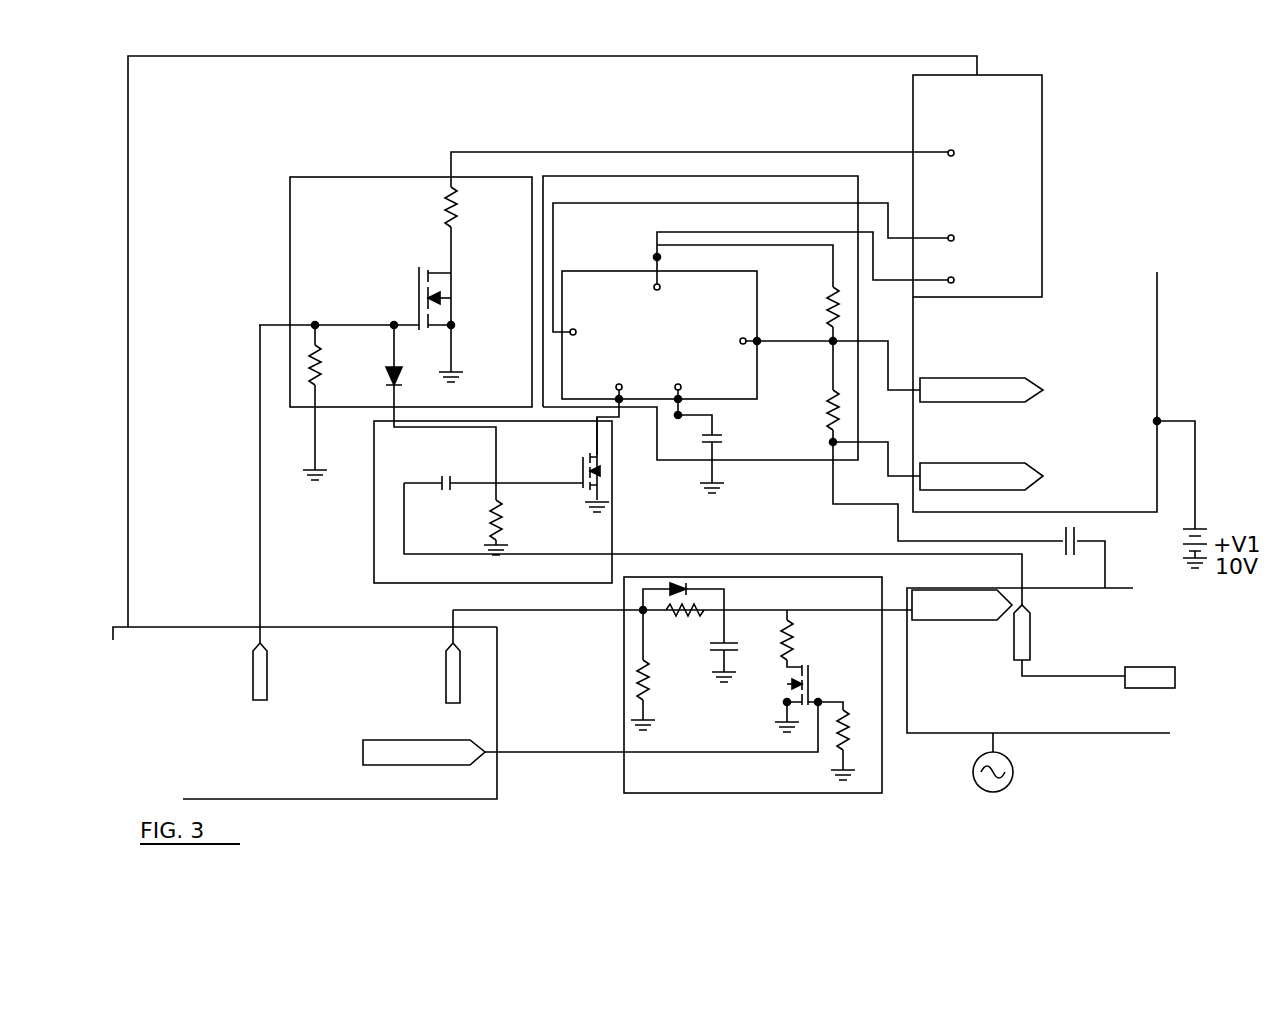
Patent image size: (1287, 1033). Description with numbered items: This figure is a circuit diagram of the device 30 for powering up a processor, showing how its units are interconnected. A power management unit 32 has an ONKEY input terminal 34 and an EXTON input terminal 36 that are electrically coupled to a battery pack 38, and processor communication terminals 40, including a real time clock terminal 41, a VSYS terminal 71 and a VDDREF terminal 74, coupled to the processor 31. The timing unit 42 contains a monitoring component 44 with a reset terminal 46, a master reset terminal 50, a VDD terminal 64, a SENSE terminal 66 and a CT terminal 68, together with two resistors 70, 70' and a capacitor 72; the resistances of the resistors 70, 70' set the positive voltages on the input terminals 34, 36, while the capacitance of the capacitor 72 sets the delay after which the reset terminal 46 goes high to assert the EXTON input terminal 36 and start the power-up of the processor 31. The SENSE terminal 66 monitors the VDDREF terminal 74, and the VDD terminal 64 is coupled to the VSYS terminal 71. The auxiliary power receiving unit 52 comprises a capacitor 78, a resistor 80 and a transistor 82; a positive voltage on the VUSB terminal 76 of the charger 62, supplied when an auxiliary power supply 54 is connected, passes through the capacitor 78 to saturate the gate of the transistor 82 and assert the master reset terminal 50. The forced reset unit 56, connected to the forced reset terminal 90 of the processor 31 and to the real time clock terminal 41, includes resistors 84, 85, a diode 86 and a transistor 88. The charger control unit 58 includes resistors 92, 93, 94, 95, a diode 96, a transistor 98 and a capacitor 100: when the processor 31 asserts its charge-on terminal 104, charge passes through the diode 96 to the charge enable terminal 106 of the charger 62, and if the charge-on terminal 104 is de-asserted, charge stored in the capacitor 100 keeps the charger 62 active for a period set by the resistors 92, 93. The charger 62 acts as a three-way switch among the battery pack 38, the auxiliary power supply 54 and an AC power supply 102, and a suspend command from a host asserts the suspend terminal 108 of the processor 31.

The device 30 is at (1208, 214).
The processor 31 is at (282, 800).
The power management unit 32 is at (1042, 215).
The ONKEY input terminal 34 is at (1007, 463).
The EXTON input terminal 36 is at (1007, 378).
The battery pack 38 is at (1080, 540).
The processor communication terminals 40 is at (1042, 95).
The real time clock terminal 41 is at (950, 98).
The timing unit 42 is at (648, 176).
The monitoring component 44 is at (613, 268).
The reset terminal 46 is at (732, 308).
The master reset terminal 50 is at (613, 393).
The auxiliary power receiving unit 52 is at (374, 540).
The auxiliary power supply 54 is at (1150, 667).
The forced reset unit 56 is at (322, 177).
The charger control unit 58 is at (838, 830).
The charger 62 is at (1122, 733).
The VDD terminal 64 is at (652, 278).
The SENSE terminal 66 is at (595, 303).
The CT terminal 68 is at (687, 378).
The resistor 70 is at (847, 313).
The resistor 70' is at (920, 441).
The VSYS terminal 71 is at (988, 268).
The capacitor 72 is at (730, 452).
The VDDREF terminal 74 is at (997, 235).
The VUSB terminal 76 is at (1030, 620).
The capacitor 78 is at (428, 473).
The resistor 80 is at (495, 517).
The transistor 82 is at (600, 471).
The resistor 84 is at (445, 222).
The resistor 85 is at (305, 380).
The diode 86 is at (400, 397).
The transistor 88 is at (455, 297).
The forced reset terminal 90 is at (253, 670).
The resistor 92 is at (687, 605).
The resistor 93 is at (636, 682).
The resistor 94 is at (827, 638).
The resistor 95 is at (873, 737).
The diode 96 is at (682, 583).
The transistor 98 is at (787, 679).
The capacitor 100 is at (768, 630).
The AC power supply 102 is at (1012, 765).
The charge-on terminal 104 is at (446, 670).
The charge enable terminal 106 is at (932, 621).
The suspend terminal 108 is at (477, 765).